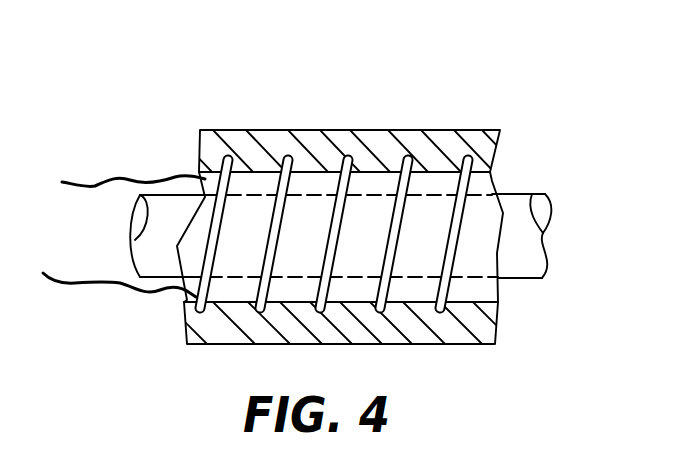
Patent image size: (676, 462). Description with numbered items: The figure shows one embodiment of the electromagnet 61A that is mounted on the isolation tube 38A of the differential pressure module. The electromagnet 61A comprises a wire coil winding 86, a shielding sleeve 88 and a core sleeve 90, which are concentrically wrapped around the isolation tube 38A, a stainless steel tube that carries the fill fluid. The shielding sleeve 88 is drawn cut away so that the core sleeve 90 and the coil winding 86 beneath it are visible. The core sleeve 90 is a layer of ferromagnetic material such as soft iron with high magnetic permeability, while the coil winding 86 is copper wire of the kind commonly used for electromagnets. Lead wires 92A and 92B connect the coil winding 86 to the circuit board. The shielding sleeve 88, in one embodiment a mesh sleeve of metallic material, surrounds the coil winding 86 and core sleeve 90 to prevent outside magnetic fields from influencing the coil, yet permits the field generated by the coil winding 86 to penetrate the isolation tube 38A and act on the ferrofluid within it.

The electromagnet 61A is at (183, 73).
The wire coil winding 86 is at (285, 158).
The shielding sleeve 88 is at (482, 147).
The core sleeve 90 is at (477, 292).
The isolation tube 38A is at (521, 212).
The lead wire 92A is at (61, 278).
The lead wire 92B is at (103, 180).